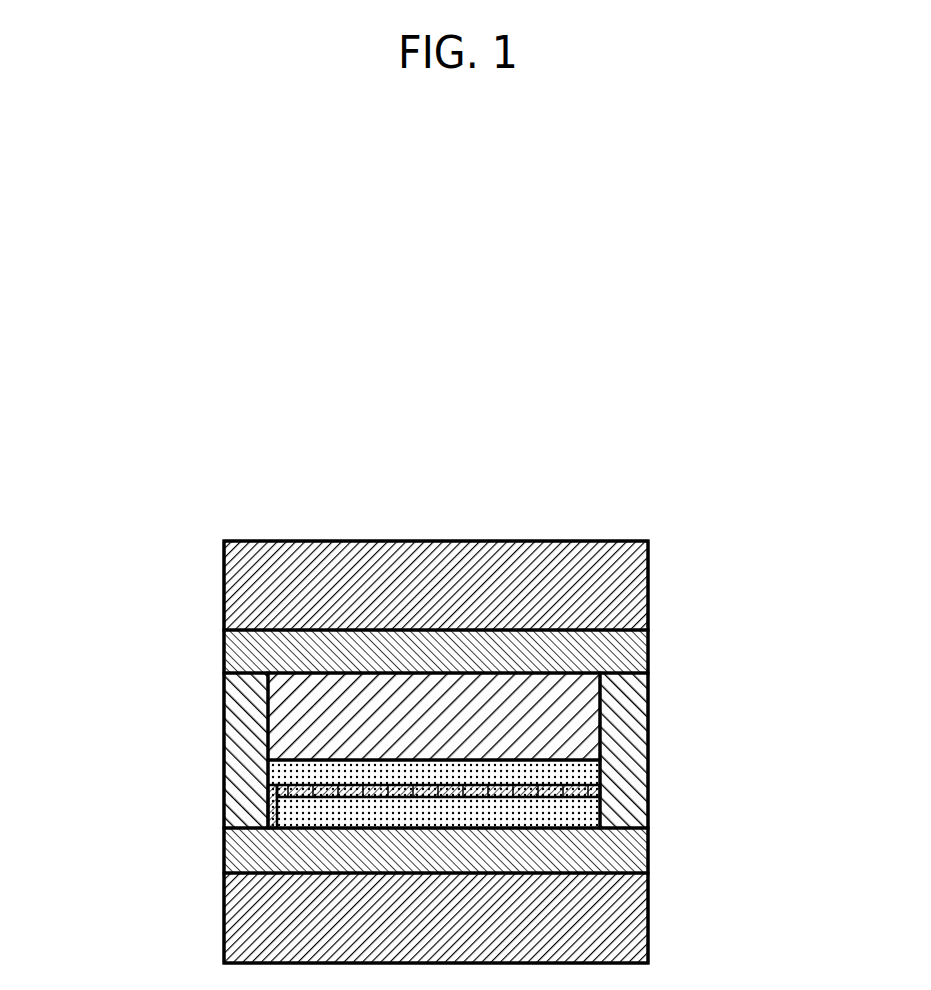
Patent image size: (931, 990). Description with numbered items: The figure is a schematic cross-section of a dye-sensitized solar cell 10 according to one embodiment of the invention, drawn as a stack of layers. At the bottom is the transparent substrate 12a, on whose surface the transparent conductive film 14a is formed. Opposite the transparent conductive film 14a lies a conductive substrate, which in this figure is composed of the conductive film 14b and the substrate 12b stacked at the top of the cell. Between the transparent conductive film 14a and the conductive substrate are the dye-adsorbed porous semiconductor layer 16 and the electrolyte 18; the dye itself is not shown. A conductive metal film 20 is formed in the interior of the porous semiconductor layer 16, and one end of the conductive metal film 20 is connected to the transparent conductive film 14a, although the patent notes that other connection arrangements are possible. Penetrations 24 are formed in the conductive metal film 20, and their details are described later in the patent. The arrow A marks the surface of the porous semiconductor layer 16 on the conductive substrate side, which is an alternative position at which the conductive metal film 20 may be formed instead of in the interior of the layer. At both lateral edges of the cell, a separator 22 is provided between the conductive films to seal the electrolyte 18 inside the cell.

The dye-sensitized solar cell 10 is at (240, 517).
The transparent substrate 12a is at (648, 913).
The substrate 12b is at (648, 588).
The transparent conductive film 14a is at (648, 853).
The conductive film 14b is at (648, 653).
The porous semiconductor layer 16 is at (647, 820).
The electrolyte 18 is at (290, 723).
The conductive metal film 20 is at (592, 777).
The separator 22 is at (647, 713).
The penetration 24 is at (340, 797).
The arrow A is at (260, 760).